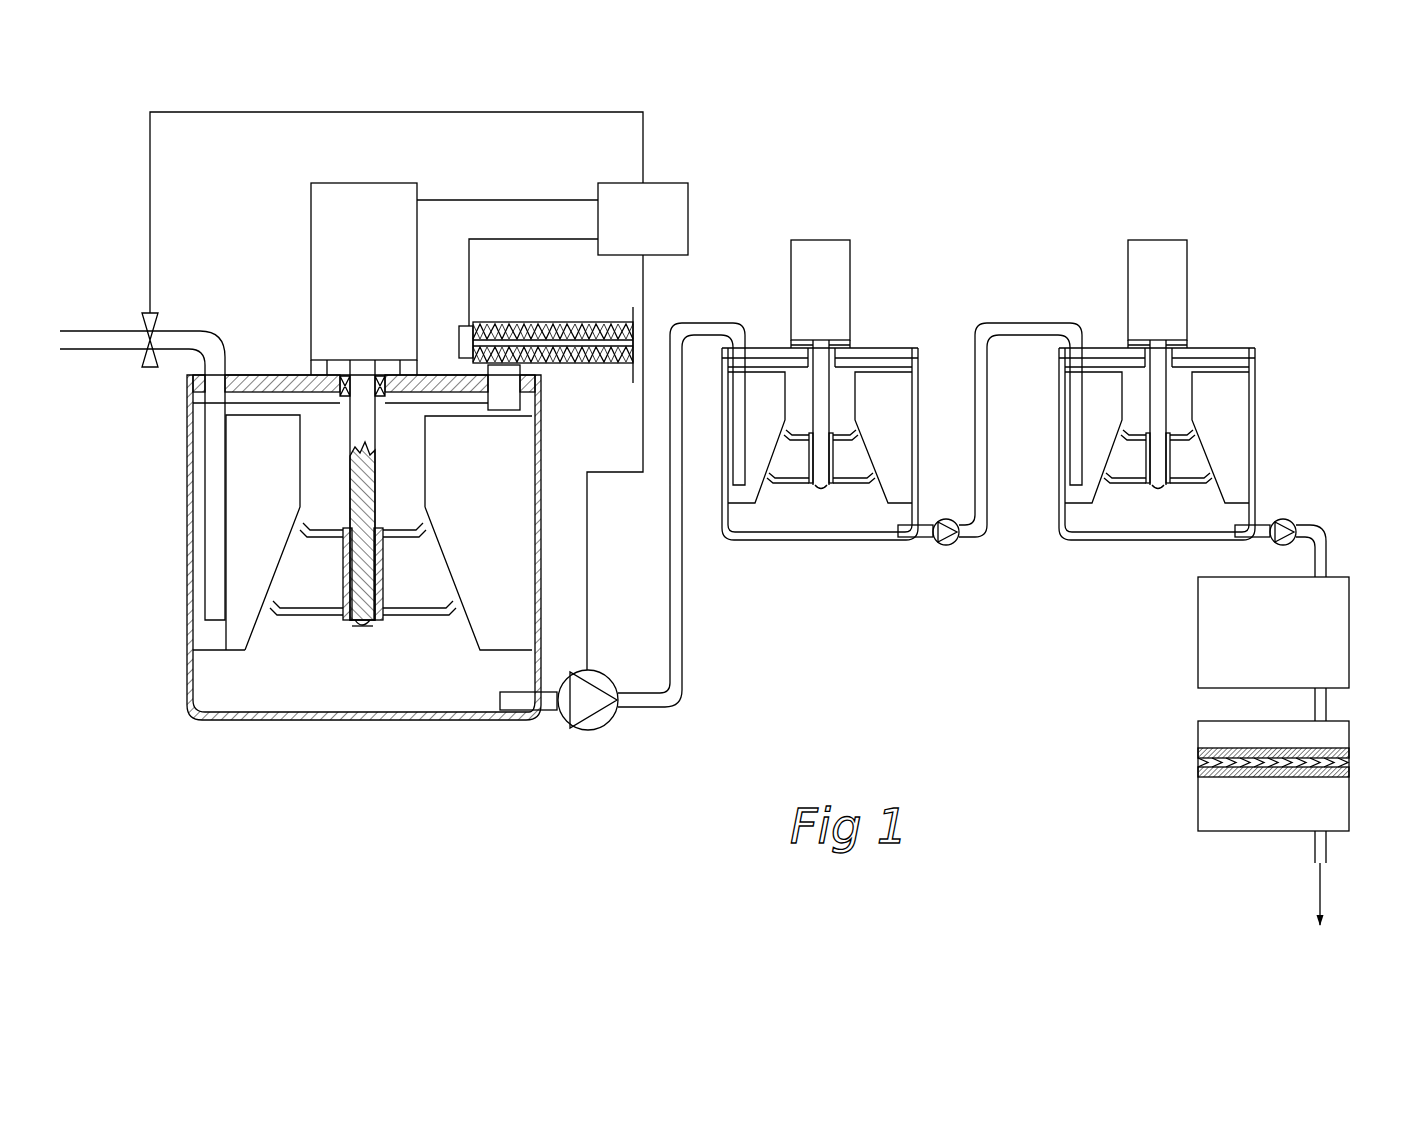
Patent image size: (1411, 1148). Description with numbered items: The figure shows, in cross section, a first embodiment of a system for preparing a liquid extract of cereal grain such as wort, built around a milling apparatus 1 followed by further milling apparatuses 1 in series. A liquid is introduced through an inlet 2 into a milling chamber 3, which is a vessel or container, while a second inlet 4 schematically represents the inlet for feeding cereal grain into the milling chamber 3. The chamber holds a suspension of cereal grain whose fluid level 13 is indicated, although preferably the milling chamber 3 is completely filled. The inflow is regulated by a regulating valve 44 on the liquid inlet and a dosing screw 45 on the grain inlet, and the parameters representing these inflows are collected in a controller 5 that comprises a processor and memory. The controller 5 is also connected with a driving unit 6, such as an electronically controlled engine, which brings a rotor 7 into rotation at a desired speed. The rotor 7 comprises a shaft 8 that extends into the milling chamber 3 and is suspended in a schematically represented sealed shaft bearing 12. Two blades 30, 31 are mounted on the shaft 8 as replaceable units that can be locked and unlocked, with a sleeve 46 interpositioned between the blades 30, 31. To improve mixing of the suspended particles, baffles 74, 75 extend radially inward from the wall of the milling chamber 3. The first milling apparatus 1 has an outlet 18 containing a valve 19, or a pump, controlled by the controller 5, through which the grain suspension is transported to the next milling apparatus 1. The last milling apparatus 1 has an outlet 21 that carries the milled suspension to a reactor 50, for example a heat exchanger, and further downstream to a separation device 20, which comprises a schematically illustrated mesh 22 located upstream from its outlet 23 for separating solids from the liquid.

The milling apparatus 1 is at (725, 253).
The inlet 2 is at (188, 347).
The milling chamber 3 is at (333, 647).
The second inlet 4 is at (515, 397).
The controller 5 is at (688, 215).
The driving unit 6 is at (357, 223).
The rotor 7 is at (390, 430).
The shaft 8 is at (365, 625).
The sealed shaft bearing 12 is at (348, 402).
The fluid level 13 is at (278, 405).
The outlet 18 is at (543, 707).
The valve 19 is at (590, 694).
The separation device 20 is at (1175, 805).
The outlet 21 is at (1318, 535).
The mesh 22 is at (1307, 763).
The outlet 23 is at (1318, 853).
The blade 30 is at (335, 623).
The blade 31 is at (328, 512).
The regulating valve 44 is at (147, 316).
The dosing screw 45 is at (593, 327).
The sleeve 46 is at (380, 584).
The reactor 50 is at (1180, 638).
The baffle 74 is at (218, 640).
The baffle 75 is at (495, 513).